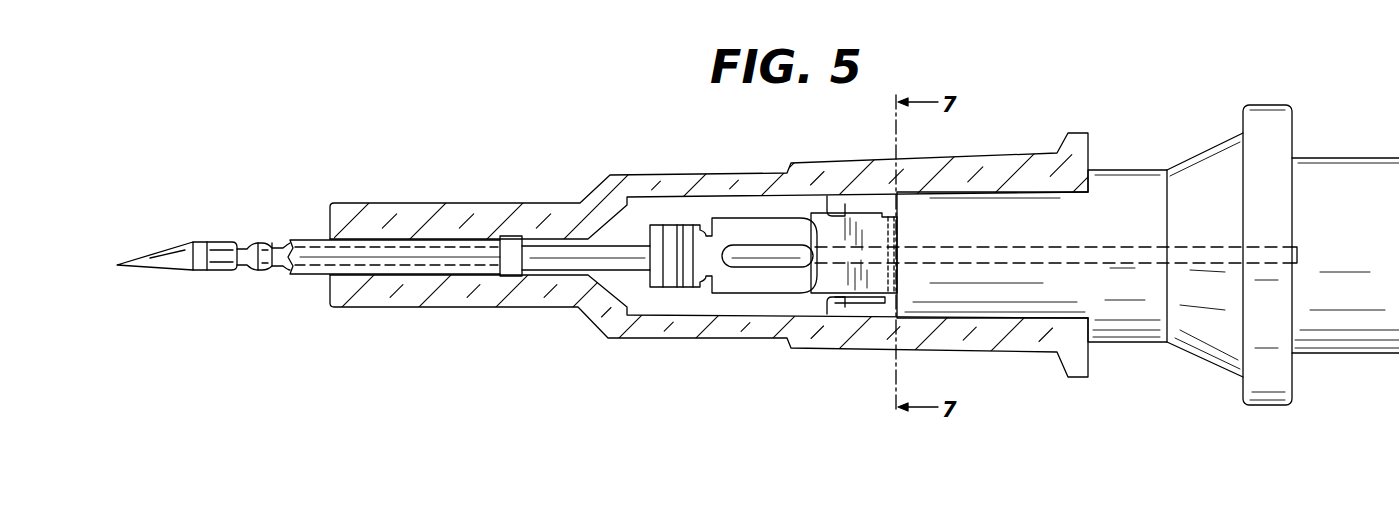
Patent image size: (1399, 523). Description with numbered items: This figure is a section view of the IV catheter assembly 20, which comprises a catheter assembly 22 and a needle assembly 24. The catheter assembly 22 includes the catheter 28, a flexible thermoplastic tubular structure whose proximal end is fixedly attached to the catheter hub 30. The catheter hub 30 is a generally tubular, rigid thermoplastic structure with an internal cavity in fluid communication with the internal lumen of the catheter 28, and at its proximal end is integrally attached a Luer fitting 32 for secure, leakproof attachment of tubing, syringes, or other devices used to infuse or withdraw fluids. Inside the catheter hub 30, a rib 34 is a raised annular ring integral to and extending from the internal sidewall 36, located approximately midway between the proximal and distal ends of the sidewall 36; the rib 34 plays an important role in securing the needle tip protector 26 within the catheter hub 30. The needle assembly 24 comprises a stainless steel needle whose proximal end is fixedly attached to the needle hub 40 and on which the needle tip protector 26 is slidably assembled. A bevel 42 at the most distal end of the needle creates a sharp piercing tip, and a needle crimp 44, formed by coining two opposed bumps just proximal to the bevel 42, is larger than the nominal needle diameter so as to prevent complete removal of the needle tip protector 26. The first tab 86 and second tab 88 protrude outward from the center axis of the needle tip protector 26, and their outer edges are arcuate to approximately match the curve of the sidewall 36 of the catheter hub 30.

The IV catheter assembly 20 is at (1052, 105).
The catheter assembly 22 is at (567, 161).
The needle assembly 24 is at (1213, 122).
The needle tip protector 26 is at (745, 298).
The catheter 28 is at (300, 239).
The catheter hub 30 is at (976, 154).
The Luer fitting 32 is at (1082, 378).
The rib 34 is at (838, 306).
The internal sidewall 36 is at (882, 305).
The needle hub 40 is at (1012, 310).
The bevel 42 is at (132, 267).
The needle crimp 44 is at (262, 272).
The first tab 86 is at (815, 198).
The second tab 88 is at (822, 310).